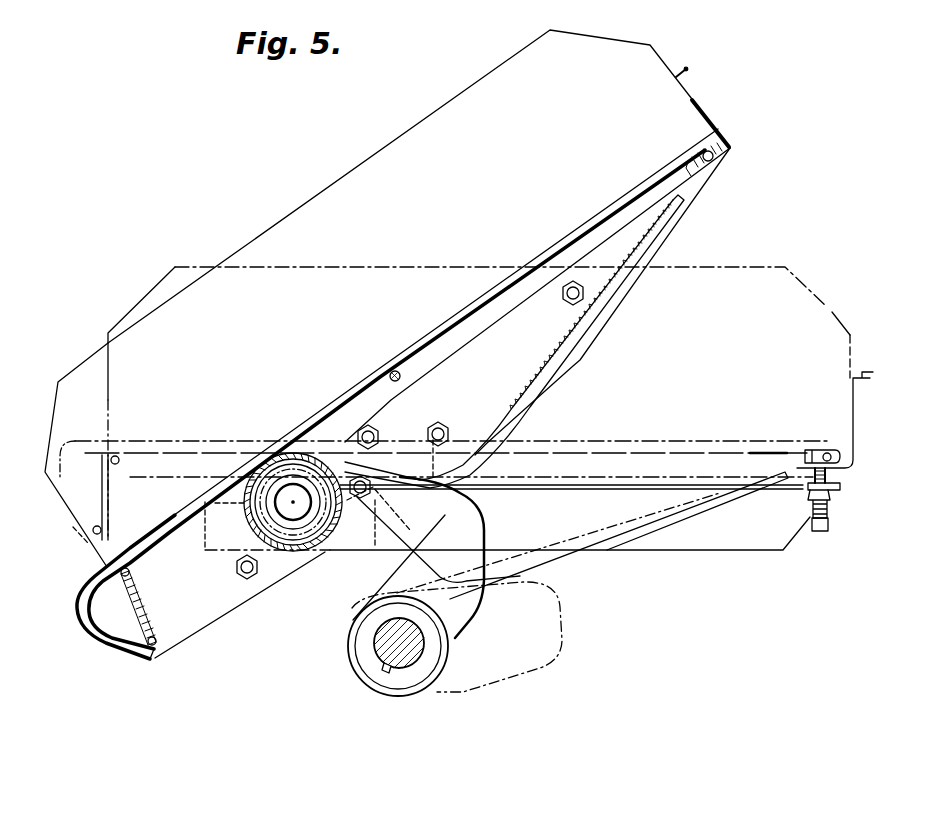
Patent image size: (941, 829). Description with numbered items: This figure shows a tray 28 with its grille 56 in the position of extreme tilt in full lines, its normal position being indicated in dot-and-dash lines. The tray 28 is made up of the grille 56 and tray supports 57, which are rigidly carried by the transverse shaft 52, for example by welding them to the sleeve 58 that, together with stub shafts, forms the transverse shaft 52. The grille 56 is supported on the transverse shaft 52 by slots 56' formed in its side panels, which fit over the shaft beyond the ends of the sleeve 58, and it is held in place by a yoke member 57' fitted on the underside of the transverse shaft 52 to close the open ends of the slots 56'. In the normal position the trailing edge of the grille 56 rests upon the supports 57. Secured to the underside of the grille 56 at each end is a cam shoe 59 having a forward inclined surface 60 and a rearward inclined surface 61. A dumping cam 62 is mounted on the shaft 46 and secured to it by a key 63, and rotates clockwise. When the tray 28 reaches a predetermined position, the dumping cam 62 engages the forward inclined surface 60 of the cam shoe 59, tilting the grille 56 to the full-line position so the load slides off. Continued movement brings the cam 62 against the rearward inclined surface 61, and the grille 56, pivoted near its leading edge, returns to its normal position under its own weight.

The tray 28 is at (873, 483).
The shaft 46 is at (380, 645).
The transverse shaft 52 is at (293, 500).
The grille 56 is at (473, 298).
The slots 56' is at (357, 526).
The tray supports 57 is at (619, 535).
The yoke member 57' is at (240, 580).
The sleeve 58 is at (270, 480).
The cam shoe 59 is at (552, 374).
The forward inclined surface 60 is at (405, 485).
The rearward inclined surface 61 is at (658, 237).
The dumping cam 62 is at (470, 609).
The key 63 is at (387, 668).